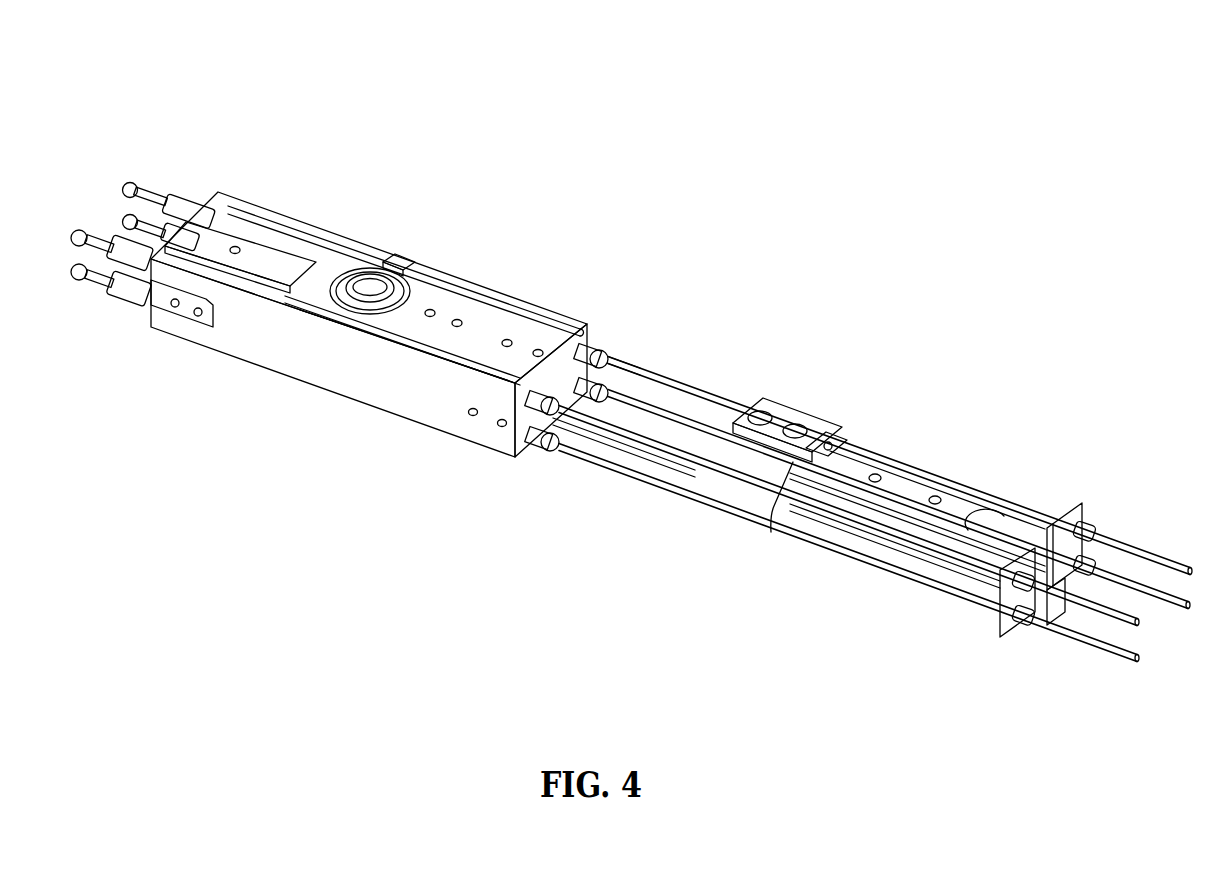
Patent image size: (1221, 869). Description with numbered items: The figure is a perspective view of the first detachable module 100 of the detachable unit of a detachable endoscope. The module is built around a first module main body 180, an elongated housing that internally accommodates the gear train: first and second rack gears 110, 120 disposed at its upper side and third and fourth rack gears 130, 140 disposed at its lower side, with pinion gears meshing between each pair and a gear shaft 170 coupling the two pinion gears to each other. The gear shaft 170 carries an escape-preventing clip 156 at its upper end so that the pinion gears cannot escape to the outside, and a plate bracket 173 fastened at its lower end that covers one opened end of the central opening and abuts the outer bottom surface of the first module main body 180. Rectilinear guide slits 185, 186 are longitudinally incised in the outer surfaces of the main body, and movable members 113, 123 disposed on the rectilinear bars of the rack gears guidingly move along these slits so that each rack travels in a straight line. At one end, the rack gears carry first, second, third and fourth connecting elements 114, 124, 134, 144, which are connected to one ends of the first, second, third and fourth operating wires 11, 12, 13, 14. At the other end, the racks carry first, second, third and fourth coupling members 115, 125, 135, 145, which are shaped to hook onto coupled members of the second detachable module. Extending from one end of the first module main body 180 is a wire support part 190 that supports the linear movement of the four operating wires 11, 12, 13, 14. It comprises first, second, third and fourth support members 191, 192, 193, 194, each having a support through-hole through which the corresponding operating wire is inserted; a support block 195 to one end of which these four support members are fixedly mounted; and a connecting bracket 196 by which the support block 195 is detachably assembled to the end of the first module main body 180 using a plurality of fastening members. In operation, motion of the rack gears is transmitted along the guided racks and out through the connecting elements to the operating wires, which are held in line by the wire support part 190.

The first detachable module 100 is at (520, 165).
The first rack gear 110 is at (200, 190).
The movable member 113 is at (400, 266).
The first connecting element 114 is at (586, 337).
The first coupling member 115 is at (130, 180).
The second rack gear 120 is at (140, 260).
The movable member 123 is at (343, 330).
The second connecting element 124 is at (510, 410).
The second coupling member 125 is at (76, 230).
The third rack gear 130 is at (170, 195).
The third connecting element 134 is at (616, 363).
The third coupling member 135 is at (125, 220).
The fourth rack gear 140 is at (132, 318).
The fourth connecting element 144 is at (535, 447).
The fourth coupling member 145 is at (80, 290).
The escape-preventing clip 156 is at (335, 265).
The gear shaft 170 is at (380, 260).
The plate bracket 173 is at (330, 393).
The first module main body 180 is at (262, 325).
The rectilinear guide slit 185 is at (463, 277).
The rectilinear guide slit 186 is at (440, 358).
The wire support part 190 is at (1010, 377).
The first support member 191 is at (997, 630).
The second support member 192 is at (1048, 500).
The third support member 193 is at (1020, 635).
The fourth support member 194 is at (1072, 607).
The support block 195 is at (912, 460).
The connecting bracket 196 is at (822, 426).
The first operating wire 11 is at (1140, 626).
The second operating wire 12 is at (1110, 540).
The third operating wire 13 is at (1135, 665).
The fourth operating wire 14 is at (1157, 588).